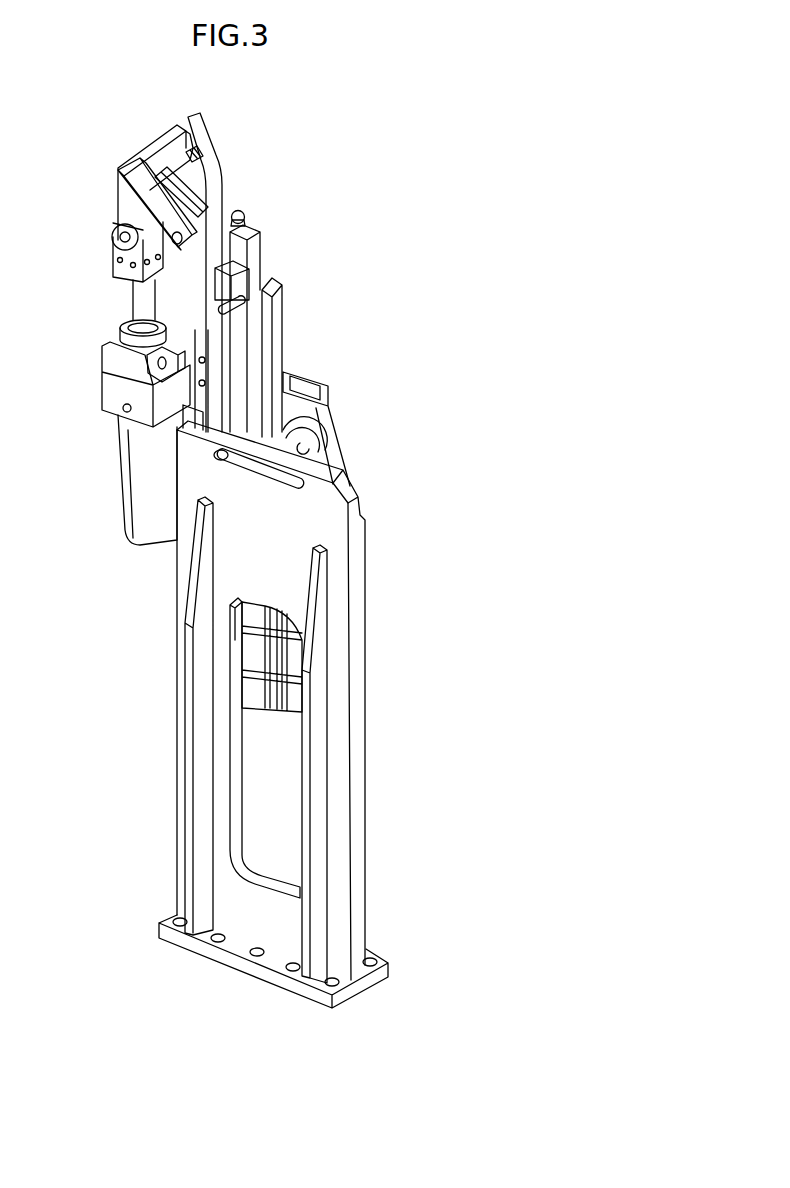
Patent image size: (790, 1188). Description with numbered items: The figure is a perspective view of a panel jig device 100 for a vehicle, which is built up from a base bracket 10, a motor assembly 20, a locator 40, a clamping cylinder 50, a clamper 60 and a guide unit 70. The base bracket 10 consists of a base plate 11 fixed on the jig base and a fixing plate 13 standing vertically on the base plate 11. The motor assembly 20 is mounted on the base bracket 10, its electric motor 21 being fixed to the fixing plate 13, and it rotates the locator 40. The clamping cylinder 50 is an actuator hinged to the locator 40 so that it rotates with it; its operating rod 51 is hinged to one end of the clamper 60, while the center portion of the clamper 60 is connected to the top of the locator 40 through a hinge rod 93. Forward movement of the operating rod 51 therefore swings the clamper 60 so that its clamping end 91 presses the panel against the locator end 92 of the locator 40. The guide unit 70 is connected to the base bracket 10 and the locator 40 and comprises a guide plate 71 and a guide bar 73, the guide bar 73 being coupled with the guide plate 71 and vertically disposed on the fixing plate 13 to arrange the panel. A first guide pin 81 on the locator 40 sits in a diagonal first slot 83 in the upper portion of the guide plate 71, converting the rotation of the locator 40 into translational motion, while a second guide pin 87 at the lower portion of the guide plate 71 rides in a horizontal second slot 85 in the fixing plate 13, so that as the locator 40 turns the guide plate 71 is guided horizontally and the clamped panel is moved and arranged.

The panel jig device 100 is at (206, 92).
The base bracket 10 is at (314, 714).
The base plate 11 is at (236, 945).
The fixing plate 13 is at (343, 766).
The motor assembly 20 is at (205, 709).
The electric motor 21 is at (255, 710).
The locator 40 is at (278, 332).
The clamping cylinder 50 is at (102, 412).
The operating rod 51 is at (143, 297).
The clamper 60 is at (152, 162).
The guide unit 70 is at (285, 408).
The guide plate 71 is at (318, 392).
The guide bar 73 is at (215, 158).
The first guide pin 81 is at (254, 276).
The first slot 83 is at (228, 318).
The second slot 85 is at (275, 478).
The second guide pin 87 is at (214, 458).
The clamping end 91 is at (209, 190).
The locator end 92 is at (246, 213).
The hinge rod 93 is at (143, 193).